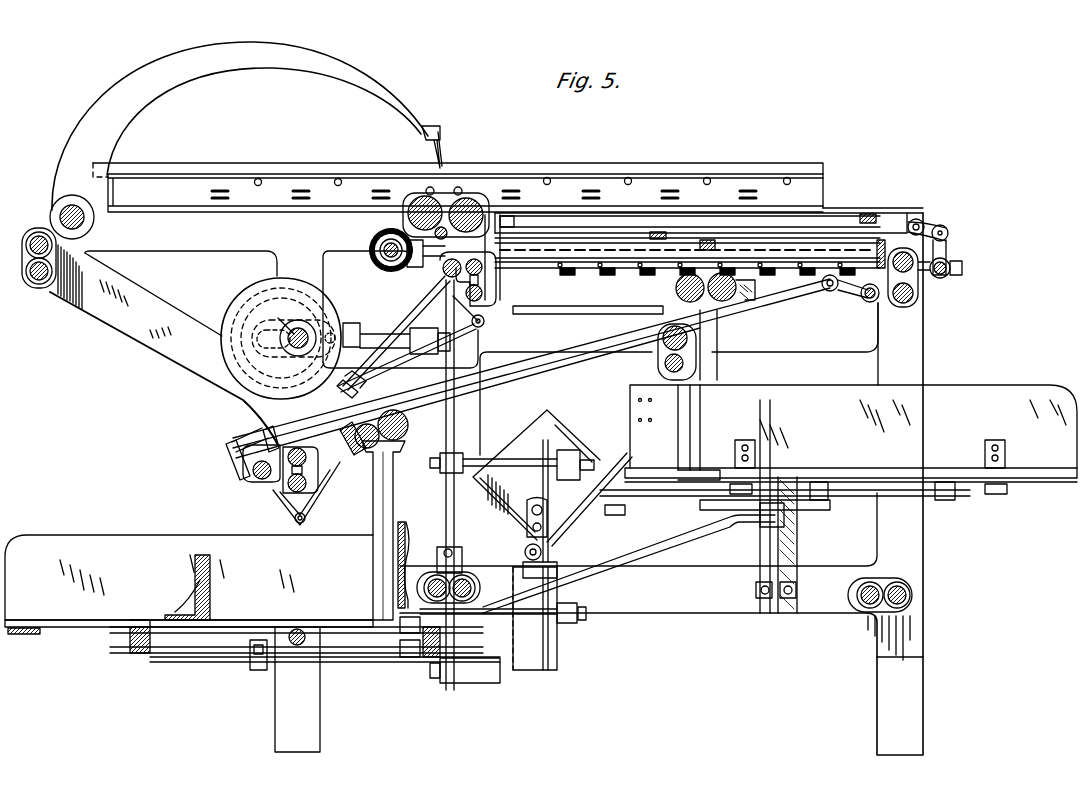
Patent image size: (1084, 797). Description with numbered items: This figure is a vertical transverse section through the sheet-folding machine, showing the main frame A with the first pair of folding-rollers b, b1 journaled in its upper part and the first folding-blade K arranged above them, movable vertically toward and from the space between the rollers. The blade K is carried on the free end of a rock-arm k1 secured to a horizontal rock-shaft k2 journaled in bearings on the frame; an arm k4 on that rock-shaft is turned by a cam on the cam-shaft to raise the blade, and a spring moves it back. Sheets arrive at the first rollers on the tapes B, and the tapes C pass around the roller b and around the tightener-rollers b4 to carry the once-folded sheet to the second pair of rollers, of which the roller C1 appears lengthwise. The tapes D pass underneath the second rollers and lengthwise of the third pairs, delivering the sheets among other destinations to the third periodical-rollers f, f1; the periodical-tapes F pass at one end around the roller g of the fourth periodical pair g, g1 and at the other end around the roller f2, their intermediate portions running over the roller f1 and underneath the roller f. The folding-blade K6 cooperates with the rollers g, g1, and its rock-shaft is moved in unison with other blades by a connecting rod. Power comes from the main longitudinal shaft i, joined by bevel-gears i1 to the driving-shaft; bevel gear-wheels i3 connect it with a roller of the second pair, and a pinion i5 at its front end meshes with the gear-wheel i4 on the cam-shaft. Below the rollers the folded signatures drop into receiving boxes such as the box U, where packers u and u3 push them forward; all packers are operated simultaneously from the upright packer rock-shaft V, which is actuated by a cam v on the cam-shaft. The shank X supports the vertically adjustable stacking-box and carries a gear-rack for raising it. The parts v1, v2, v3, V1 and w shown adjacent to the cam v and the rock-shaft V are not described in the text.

The rock-arm k1 is at (778, 228).
The rock-shaft k2 is at (60, 215).
The arm k4 is at (706, 240).
The first folding-blade K is at (441, 152).
The folding-blade K6 is at (368, 388).
The tapes B is at (212, 192).
The first folding-roller b is at (410, 205).
The first folding-roller b1 is at (498, 172).
The tightener-rollers b4 is at (928, 222).
The tapes C is at (888, 232).
The second folding-roller C1 is at (690, 264).
The tapes D is at (600, 276).
The main longitudinal shaft i is at (378, 247).
The bevel-gears i1 is at (278, 316).
The bevel gear-wheels i3 is at (398, 300).
The gear-wheel i4 is at (496, 300).
The pinion i5 is at (280, 492).
The cam v is at (225, 306).
The slide block v1 is at (436, 336).
The slide bar v2 is at (362, 330).
The lower table v3 is at (252, 629).
The third periodical folding-roller f is at (672, 285).
The third periodical folding-roller f1 is at (724, 300).
The roller f2 is at (830, 292).
The fourth periodical folding-roller g is at (398, 442).
The fourth periodical folding-roller g1 is at (364, 450).
The upright packer rock-shaft V is at (452, 437).
The inclined lever V1 is at (620, 456).
The diamond guide plate w is at (536, 475).
The shank X is at (560, 668).
The tapes F is at (560, 386).
The packer u is at (676, 403).
The packer u3 is at (402, 530).
The receiving or packing box U is at (838, 440).
The main frame A is at (862, 697).